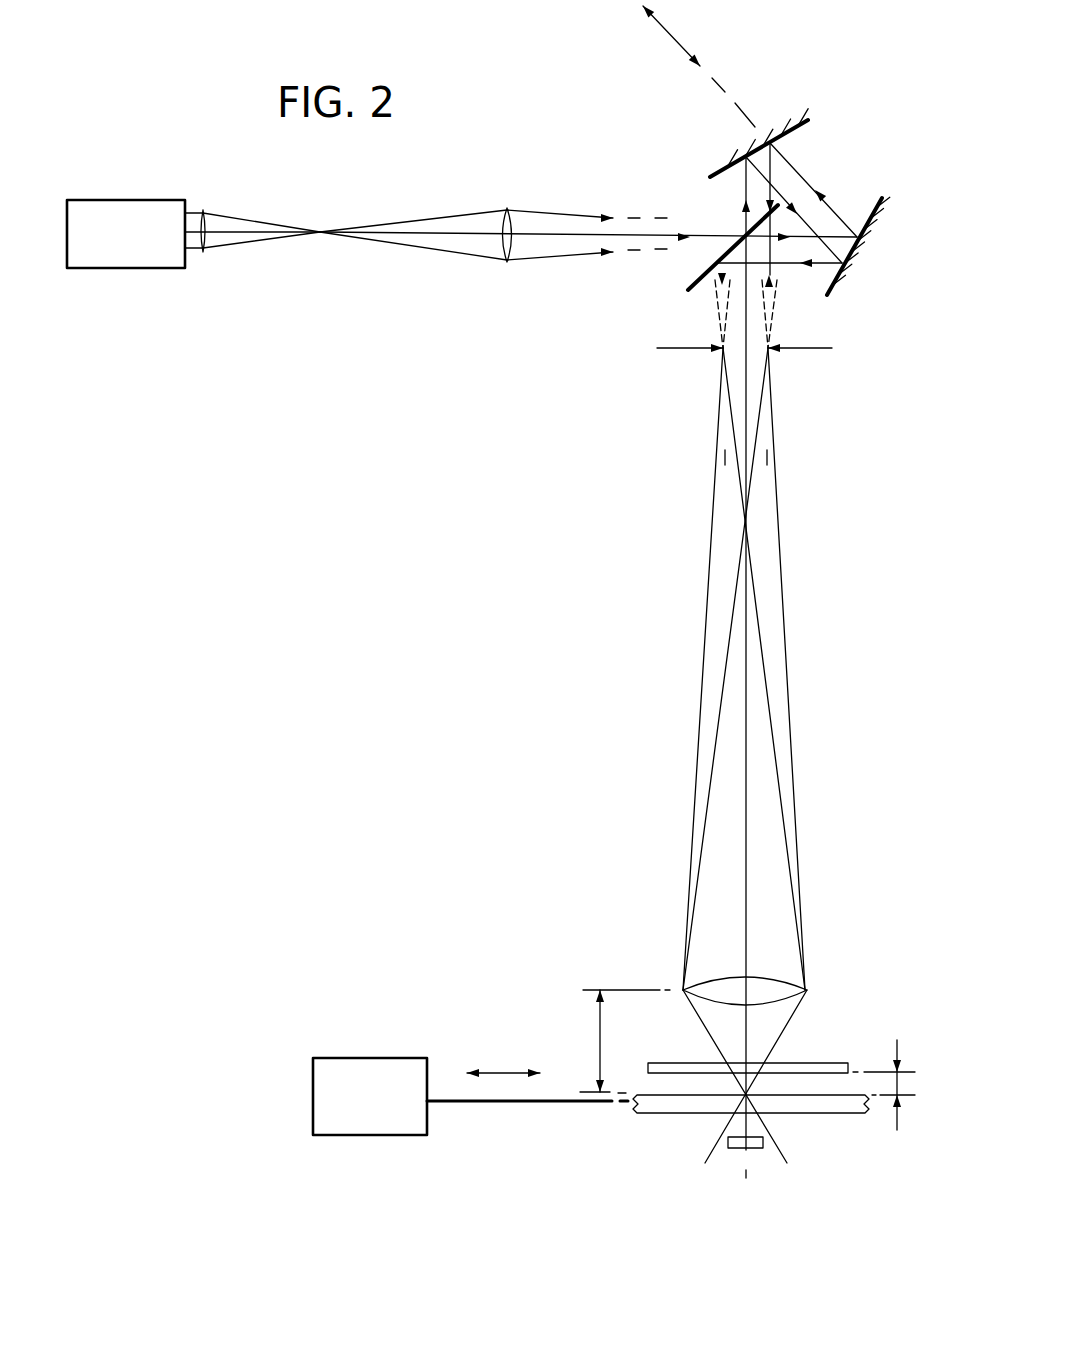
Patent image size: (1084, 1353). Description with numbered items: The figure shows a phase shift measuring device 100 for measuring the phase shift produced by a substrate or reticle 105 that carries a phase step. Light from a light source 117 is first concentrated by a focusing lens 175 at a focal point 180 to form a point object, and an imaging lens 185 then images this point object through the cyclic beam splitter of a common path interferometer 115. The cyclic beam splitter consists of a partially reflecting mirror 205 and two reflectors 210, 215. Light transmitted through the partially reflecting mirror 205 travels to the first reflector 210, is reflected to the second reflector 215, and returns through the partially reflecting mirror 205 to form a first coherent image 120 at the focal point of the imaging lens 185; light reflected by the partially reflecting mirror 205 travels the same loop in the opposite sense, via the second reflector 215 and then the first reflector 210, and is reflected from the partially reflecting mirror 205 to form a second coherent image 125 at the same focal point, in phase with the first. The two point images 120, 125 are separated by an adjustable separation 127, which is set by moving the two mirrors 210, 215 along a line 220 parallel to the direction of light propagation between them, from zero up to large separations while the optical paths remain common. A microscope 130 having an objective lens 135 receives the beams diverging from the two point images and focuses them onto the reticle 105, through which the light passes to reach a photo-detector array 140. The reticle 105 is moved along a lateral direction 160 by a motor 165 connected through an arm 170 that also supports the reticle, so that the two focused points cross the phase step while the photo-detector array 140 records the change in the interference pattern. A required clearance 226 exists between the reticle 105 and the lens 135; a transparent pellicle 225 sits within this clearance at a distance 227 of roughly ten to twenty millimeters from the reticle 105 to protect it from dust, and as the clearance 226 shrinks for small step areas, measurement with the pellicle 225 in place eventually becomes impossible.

The phase shift measuring device 100 is at (320, 623).
The reticle 105 is at (675, 1100).
The common path interferometer 115 is at (860, 133).
The light source 117 is at (132, 268).
The first coherent image 120 is at (772, 355).
The second coherent image 125 is at (720, 355).
The adjustable separation 127 is at (668, 348).
The microscope 130 is at (615, 933).
The objective lens 135 is at (772, 983).
The photo-detector array 140 is at (745, 1150).
The lateral direction 160 is at (505, 1073).
The motor 165 is at (372, 1058).
The arm 170 is at (518, 1103).
The focusing lens 175 is at (215, 242).
The focal point 180 is at (325, 237).
The imaging lens 185 is at (498, 248).
The partially reflecting mirror 205 is at (693, 287).
The first reflector 210 is at (868, 200).
The second reflector 215 is at (712, 176).
The line of mirror movement 220 is at (672, 38).
The pellicle 225 is at (820, 1063).
The clearance 226 is at (600, 1040).
The pellicle distance 227 is at (897, 1085).